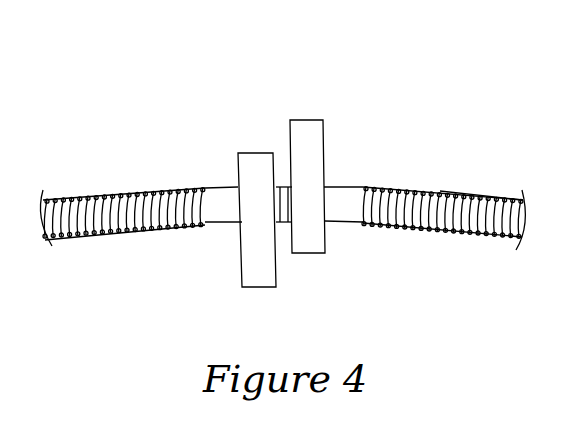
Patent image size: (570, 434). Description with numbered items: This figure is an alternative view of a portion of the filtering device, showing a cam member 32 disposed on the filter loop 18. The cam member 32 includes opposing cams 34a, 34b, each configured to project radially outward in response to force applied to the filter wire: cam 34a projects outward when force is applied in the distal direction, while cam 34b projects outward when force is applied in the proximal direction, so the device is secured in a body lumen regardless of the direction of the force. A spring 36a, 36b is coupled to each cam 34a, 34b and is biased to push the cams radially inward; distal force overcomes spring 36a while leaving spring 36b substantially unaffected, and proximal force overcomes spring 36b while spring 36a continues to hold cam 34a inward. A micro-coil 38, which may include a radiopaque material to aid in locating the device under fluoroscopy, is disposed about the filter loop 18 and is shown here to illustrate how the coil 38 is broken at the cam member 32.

The filter loop 18 is at (343, 190).
The cam member 32 is at (213, 258).
The cam 34a is at (246, 158).
The cam 34b is at (313, 128).
The spring 36a is at (277, 187).
The spring 36b is at (285, 187).
The micro-coil 38 is at (466, 197).